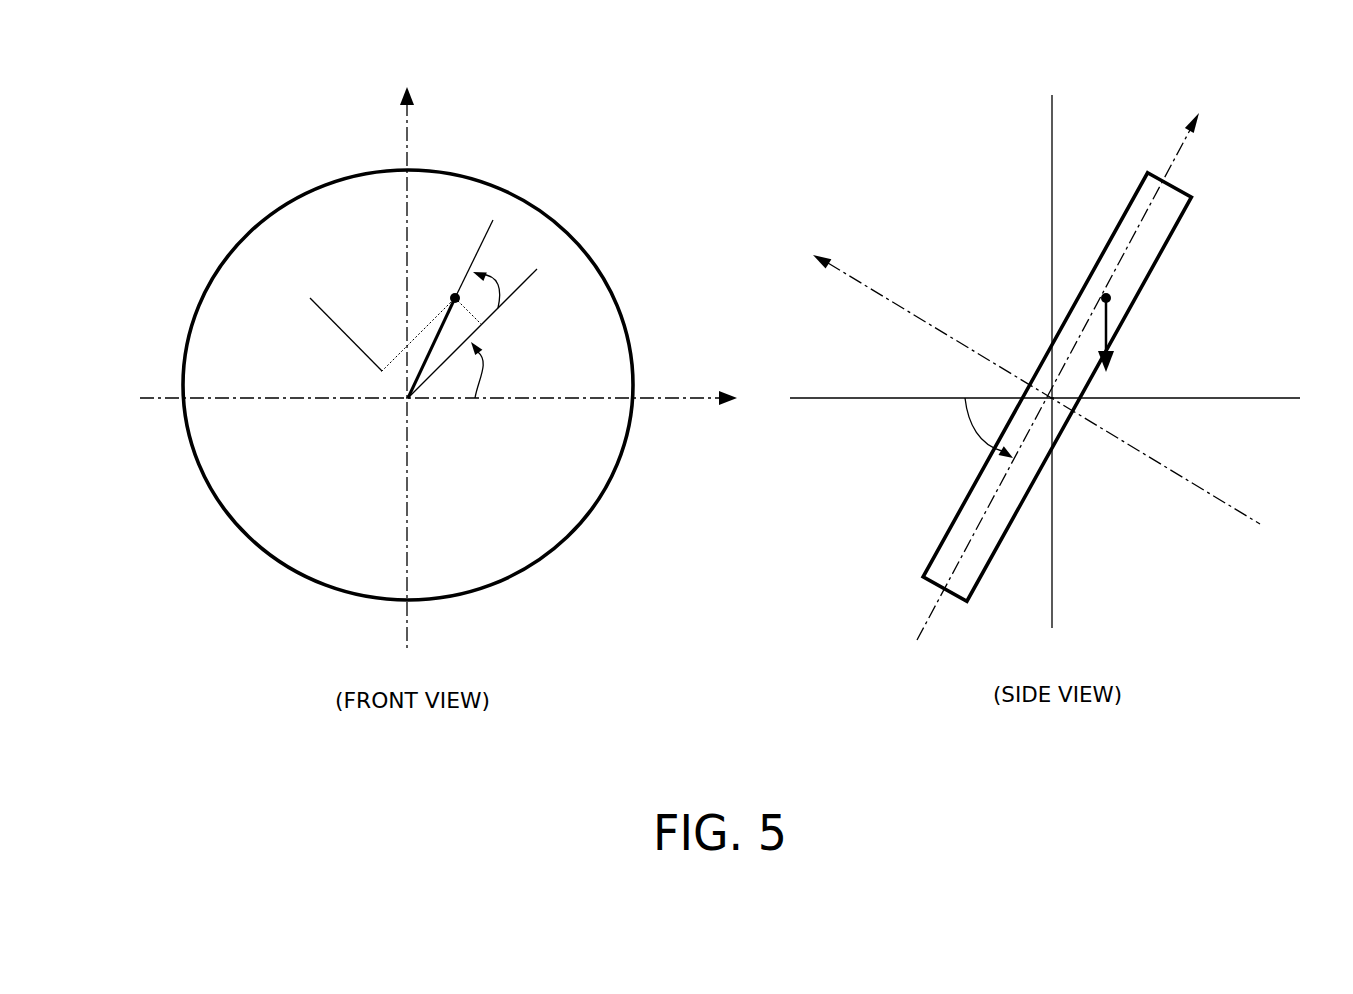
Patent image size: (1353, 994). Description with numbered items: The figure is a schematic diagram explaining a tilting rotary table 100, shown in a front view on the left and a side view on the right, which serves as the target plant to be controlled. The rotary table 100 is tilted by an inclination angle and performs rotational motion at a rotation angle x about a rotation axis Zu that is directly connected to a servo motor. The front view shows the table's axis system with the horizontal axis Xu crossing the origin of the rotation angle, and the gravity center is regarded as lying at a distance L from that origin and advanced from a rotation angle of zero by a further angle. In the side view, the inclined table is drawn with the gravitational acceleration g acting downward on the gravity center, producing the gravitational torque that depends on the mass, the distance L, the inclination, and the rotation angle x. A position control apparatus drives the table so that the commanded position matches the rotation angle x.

The tilting rotary table 100 is at (1193, 199).
The X axis of device coordinate system Xu is at (441, 380).
The rotation axis Zu is at (1036, 379).
The gravitational acceleration g is at (1117, 335).
The distance L is at (422, 347).
The rotation angle x is at (488, 370).